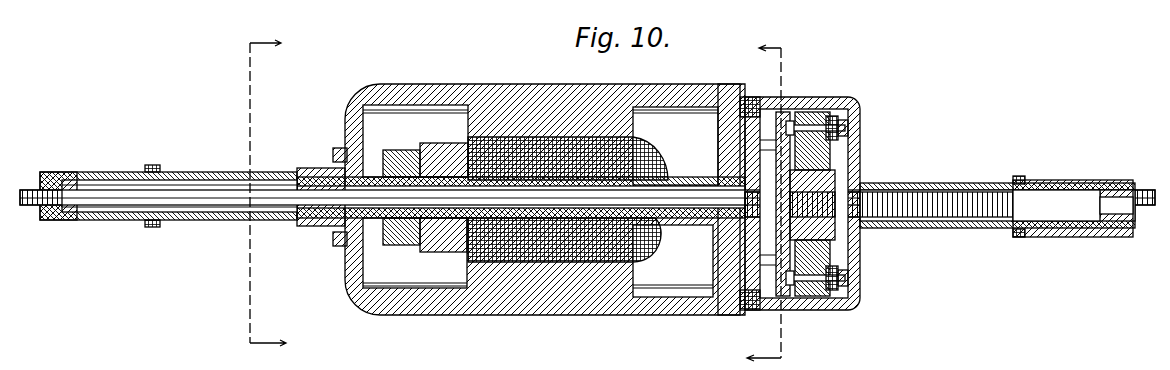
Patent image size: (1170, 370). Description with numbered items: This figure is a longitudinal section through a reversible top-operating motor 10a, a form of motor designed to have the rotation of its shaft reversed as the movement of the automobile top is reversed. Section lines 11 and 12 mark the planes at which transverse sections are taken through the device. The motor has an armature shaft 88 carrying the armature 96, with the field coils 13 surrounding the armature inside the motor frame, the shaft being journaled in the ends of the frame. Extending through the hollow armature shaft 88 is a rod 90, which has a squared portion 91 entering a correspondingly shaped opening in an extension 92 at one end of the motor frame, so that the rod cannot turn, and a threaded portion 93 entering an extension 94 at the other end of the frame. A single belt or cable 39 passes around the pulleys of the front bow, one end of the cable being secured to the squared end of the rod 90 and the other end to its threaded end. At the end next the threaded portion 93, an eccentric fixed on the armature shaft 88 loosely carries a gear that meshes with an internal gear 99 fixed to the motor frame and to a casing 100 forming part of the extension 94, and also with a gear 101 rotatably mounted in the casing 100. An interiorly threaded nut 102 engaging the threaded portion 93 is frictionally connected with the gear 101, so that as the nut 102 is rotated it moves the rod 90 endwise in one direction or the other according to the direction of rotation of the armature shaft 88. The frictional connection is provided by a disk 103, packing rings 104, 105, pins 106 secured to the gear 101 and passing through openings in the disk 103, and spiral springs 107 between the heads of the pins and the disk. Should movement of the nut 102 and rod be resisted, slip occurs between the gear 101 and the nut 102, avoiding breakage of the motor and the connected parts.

The motor 10a is at (545, 93).
The section line 11- 11 is at (258, 196).
The section line 12- 12 is at (780, 203).
The field coils 13 is at (693, 143).
The belt or cable 39 is at (210, 206).
The armature shaft 88 is at (698, 183).
The rod 90 is at (673, 186).
The squared portion 91 is at (318, 202).
The extension 92 is at (242, 178).
The threaded portion 93 is at (938, 198).
The extension 94 is at (993, 186).
The armature 96 is at (661, 155).
The internal gear 99 is at (748, 312).
The casing 100 is at (853, 120).
The gear 101 is at (770, 312).
The interiorly threaded nut 102 is at (845, 233).
The disk 103 is at (830, 157).
The packing ring 104 is at (782, 160).
The packing ring 105 is at (792, 122).
The pins 106 is at (840, 132).
The spiral springs 107 is at (832, 123).